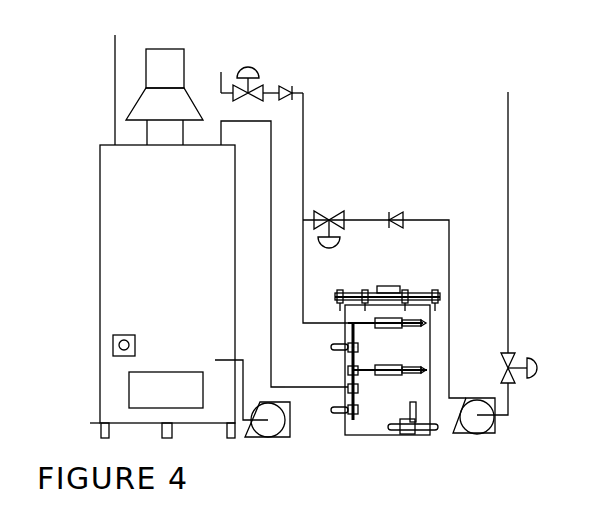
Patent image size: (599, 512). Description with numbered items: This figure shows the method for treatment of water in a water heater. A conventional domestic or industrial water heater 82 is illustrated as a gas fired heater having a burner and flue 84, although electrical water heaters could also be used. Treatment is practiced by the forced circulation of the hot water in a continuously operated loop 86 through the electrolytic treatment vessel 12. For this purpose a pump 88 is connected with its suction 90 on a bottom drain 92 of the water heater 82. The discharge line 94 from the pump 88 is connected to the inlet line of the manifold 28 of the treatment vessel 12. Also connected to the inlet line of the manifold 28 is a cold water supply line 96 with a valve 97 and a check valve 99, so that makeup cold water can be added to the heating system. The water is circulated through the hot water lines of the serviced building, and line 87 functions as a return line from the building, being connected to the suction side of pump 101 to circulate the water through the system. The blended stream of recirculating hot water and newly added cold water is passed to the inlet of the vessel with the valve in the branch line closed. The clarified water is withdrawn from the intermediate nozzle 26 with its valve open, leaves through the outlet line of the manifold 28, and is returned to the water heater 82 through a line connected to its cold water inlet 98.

The burner and flue 84 is at (168, 67).
The water heater 82 is at (170, 265).
The cold water inlet 98 is at (219, 128).
The continuously operated loop 86 is at (303, 357).
The cold water supply line 96 is at (303, 273).
The valve 97 is at (325, 214).
The check valve 99 is at (401, 213).
The return line 87 is at (508, 205).
The pump 101 is at (473, 425).
The bottom drain 92 is at (225, 358).
The pump 88 is at (272, 425).
The suction 90 is at (250, 430).
The discharge line 94 is at (285, 400).
The electrolytic treatment vessel 12 is at (385, 402).
The intermediate nozzle 26 is at (417, 365).
The manifold 28 is at (363, 347).